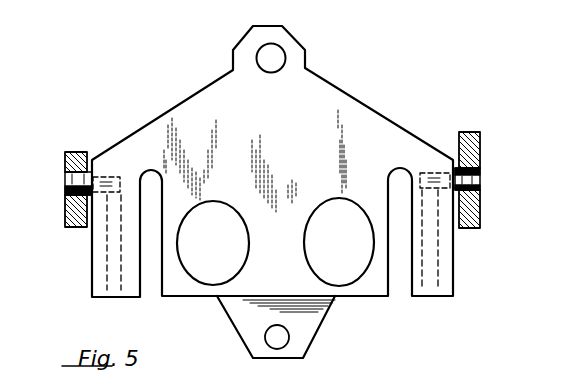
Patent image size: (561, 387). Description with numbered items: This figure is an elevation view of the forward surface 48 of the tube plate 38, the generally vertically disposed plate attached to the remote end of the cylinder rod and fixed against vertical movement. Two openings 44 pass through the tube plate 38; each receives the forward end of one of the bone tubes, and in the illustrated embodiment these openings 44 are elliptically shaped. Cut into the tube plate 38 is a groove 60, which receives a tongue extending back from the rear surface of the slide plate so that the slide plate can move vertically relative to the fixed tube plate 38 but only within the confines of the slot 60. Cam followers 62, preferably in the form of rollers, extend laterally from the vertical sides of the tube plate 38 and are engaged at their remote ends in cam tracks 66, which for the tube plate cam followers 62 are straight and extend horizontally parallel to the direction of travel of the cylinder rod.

The tube plate 38 is at (66, 246).
The forward surface 48 is at (194, 96).
The openings 44 is at (218, 253).
The groove 60 is at (150, 284).
The cam followers 62 is at (65, 190).
The cam tracks 66 is at (66, 180).